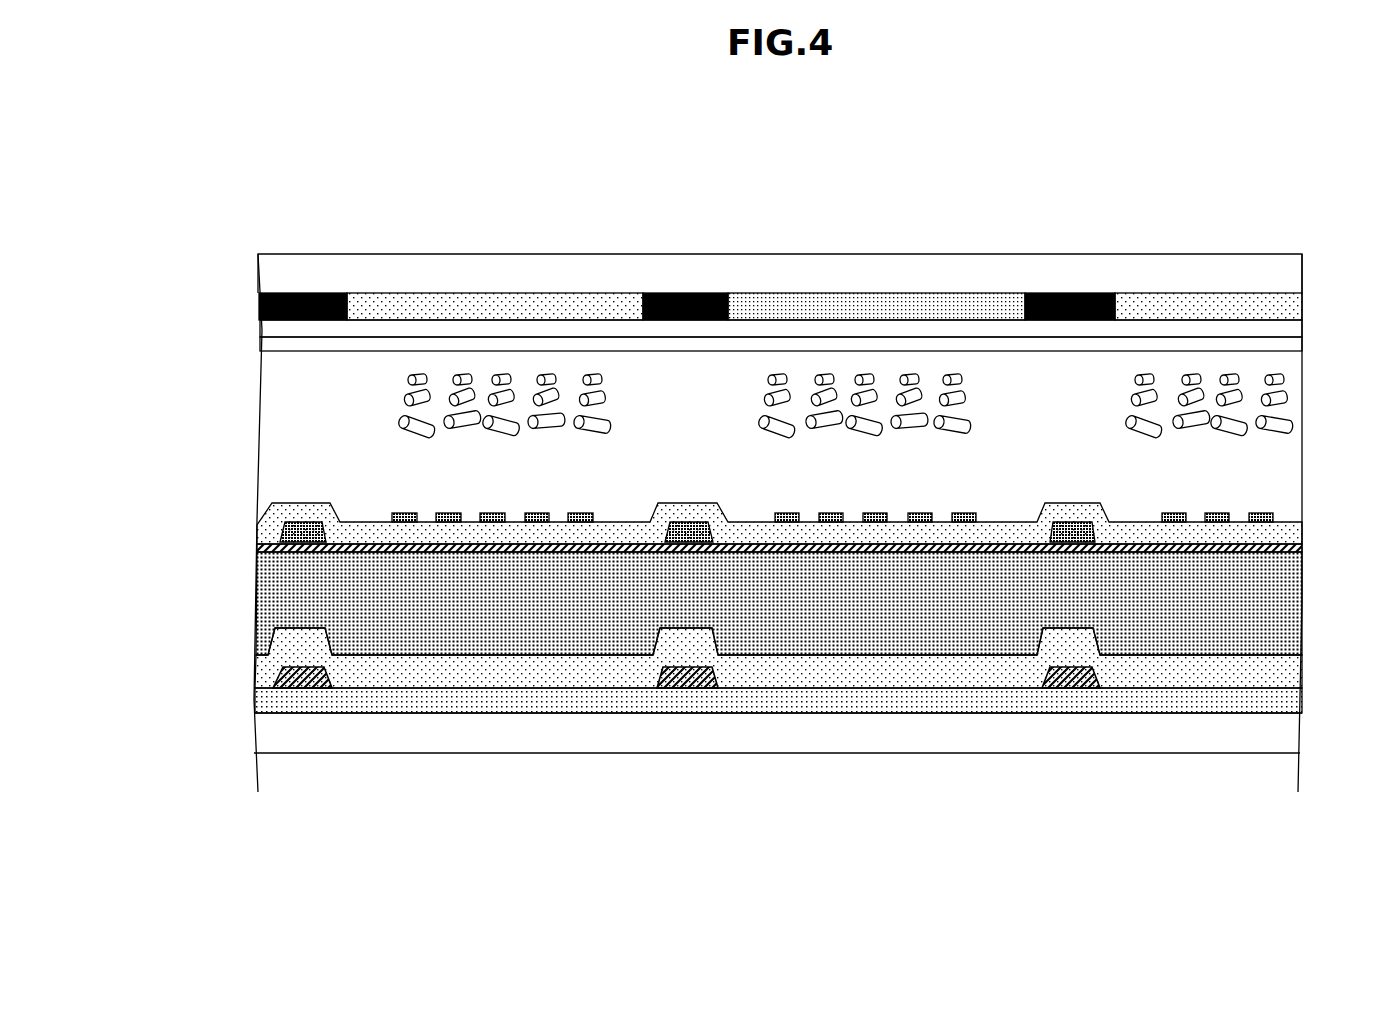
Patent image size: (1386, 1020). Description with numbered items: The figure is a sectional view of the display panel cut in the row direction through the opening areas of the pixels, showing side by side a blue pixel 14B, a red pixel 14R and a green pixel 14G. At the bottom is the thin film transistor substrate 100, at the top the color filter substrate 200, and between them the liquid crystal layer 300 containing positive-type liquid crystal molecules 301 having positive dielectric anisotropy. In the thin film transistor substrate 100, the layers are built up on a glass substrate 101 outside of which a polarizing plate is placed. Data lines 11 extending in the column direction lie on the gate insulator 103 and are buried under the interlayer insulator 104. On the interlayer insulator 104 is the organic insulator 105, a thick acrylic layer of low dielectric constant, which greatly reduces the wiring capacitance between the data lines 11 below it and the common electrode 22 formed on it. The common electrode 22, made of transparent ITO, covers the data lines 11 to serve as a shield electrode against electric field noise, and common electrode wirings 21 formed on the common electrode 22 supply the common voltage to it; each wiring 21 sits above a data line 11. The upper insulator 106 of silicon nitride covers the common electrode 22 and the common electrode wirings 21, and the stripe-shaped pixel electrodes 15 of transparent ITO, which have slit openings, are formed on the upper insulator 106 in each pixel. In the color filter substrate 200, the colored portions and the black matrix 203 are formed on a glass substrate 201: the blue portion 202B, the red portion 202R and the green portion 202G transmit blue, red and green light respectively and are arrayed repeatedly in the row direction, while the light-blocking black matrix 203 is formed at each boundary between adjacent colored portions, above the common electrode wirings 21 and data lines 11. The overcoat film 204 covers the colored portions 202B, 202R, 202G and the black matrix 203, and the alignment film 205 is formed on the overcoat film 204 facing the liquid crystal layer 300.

The glass substrate 201 is at (1288, 276).
The blue portion 202B is at (482, 299).
The red portion 202R is at (880, 299).
The green portion 202G is at (1197, 299).
The black matrix 203 is at (312, 292).
The overcoat film 204 is at (1290, 328).
The alignment film 205 is at (1290, 345).
The liquid crystal molecules 301 is at (968, 400).
The common electrode wiring 21 is at (308, 527).
The pixel electrode 15 is at (593, 493).
The upper insulator 106 is at (1287, 535).
The common electrode 22 is at (1287, 553).
The organic insulator 105 is at (1287, 611).
The interlayer insulator 104 is at (1287, 672).
The gate insulator 103 is at (1287, 705).
The glass substrate 101 is at (1287, 739).
The data line 11 is at (302, 690).
The color filter substrate 200 is at (212, 255).
The liquid crystal layer 300 is at (212, 355).
The thin film transistor substrate 100 is at (212, 500).
The blue pixel 14B is at (688, 170).
The red pixel 14R is at (1067, 170).
The green pixel 14G is at (1308, 170).